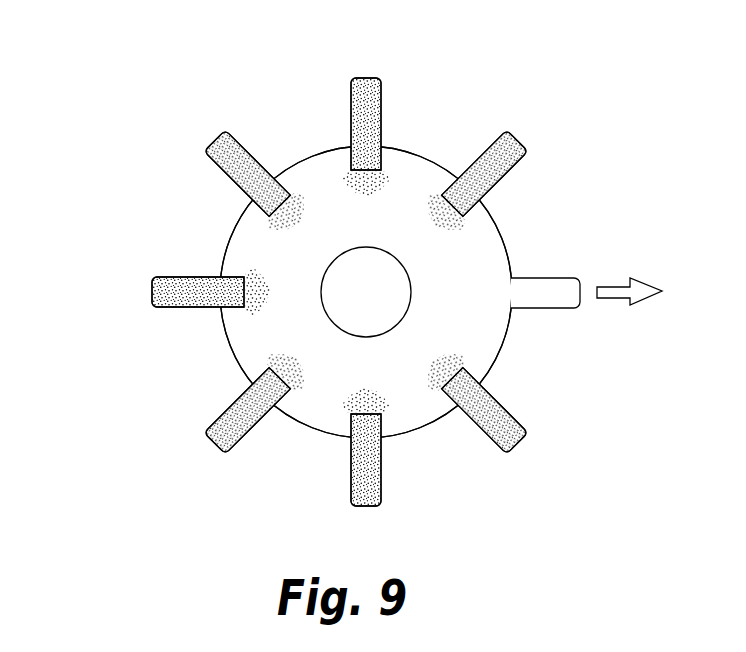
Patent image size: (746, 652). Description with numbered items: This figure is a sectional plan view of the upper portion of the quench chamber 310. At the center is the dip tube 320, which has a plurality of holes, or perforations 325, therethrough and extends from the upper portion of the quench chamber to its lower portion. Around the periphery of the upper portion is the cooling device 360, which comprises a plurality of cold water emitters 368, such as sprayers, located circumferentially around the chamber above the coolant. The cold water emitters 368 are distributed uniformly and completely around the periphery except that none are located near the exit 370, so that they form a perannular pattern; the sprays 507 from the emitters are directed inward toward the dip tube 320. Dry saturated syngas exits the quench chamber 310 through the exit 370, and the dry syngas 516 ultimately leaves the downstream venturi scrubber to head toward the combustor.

The quench chamber 310 is at (118, 405).
The dip tube 320 is at (396, 251).
The perforations 325 is at (366, 319).
The cooling device 360 is at (125, 290).
The cold water emitters 368 is at (205, 134).
The exit 370 is at (540, 259).
The spray 507 is at (266, 226).
The dry syngas 516 is at (630, 268).